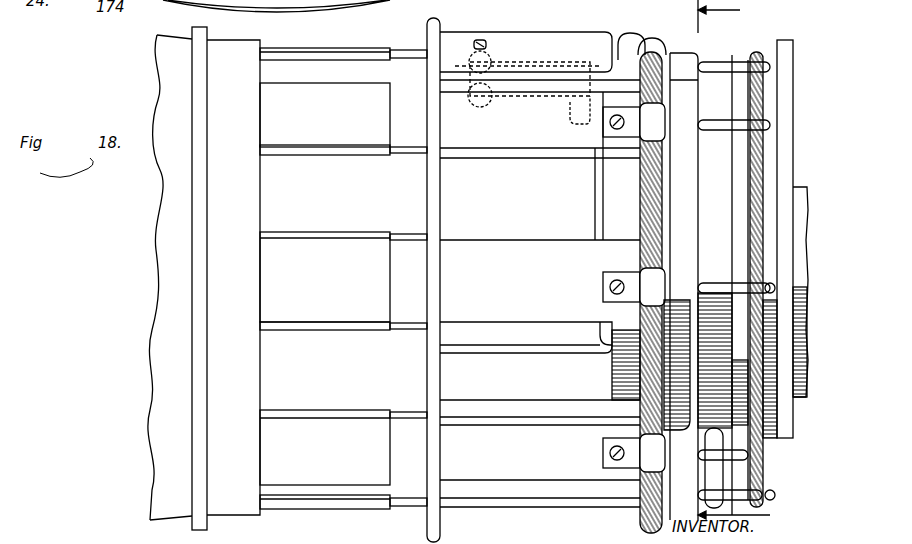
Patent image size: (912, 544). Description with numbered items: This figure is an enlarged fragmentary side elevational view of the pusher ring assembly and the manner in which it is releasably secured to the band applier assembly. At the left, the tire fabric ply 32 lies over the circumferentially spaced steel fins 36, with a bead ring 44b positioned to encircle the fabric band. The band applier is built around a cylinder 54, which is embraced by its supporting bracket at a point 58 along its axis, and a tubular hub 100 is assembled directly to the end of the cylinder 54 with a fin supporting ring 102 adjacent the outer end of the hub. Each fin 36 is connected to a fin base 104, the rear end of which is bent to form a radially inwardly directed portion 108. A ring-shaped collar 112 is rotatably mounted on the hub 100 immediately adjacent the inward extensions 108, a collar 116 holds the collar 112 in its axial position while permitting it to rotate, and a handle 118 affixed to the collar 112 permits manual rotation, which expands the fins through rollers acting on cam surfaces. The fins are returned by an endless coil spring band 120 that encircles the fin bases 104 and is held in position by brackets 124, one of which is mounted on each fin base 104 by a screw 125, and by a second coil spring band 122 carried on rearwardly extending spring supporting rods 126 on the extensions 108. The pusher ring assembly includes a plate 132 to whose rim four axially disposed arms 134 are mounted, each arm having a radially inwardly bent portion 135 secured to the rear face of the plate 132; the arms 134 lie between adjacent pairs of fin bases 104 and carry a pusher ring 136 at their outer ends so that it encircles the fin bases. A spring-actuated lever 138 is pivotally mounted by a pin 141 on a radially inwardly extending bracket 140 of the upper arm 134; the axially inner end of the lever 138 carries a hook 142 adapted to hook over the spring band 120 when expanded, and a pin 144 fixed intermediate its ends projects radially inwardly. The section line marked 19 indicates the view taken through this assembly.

The section line of FIG. 19 is at (748, 265).
The tire fabric ply 32 is at (158, 262).
The steel fins 36 is at (352, 48).
The bead ring 44b is at (200, 394).
The cylinder 54 is at (770, 462).
The embracing point of bracket 58 is at (795, 65).
The tubular hub 100 is at (762, 240).
The fin supporting ring 102 is at (683, 340).
The fin base 104 is at (500, 165).
The radially inwardly directed portion 108 is at (714, 62).
The ring-shaped collar 112 is at (706, 286).
The collar 116 is at (740, 228).
The handle 118 is at (708, 460).
The endless coil spring band 120 is at (603, 196).
The second coil spring band 122 is at (742, 188).
The bracket 124 is at (666, 118).
The screw 125 is at (607, 128).
The spring supporting rod 126 is at (727, 68).
The plate 132 is at (595, 180).
The axially disposed arm 134 is at (562, 40).
The radially inwardly bent portion 135 is at (630, 322).
The pusher ring 136 is at (427, 196).
The spring-actuated lever 138 is at (600, 72).
The bracket 140 is at (493, 88).
The pin 141 is at (468, 100).
The hook 142 is at (660, 45).
The pin 144 is at (570, 110).